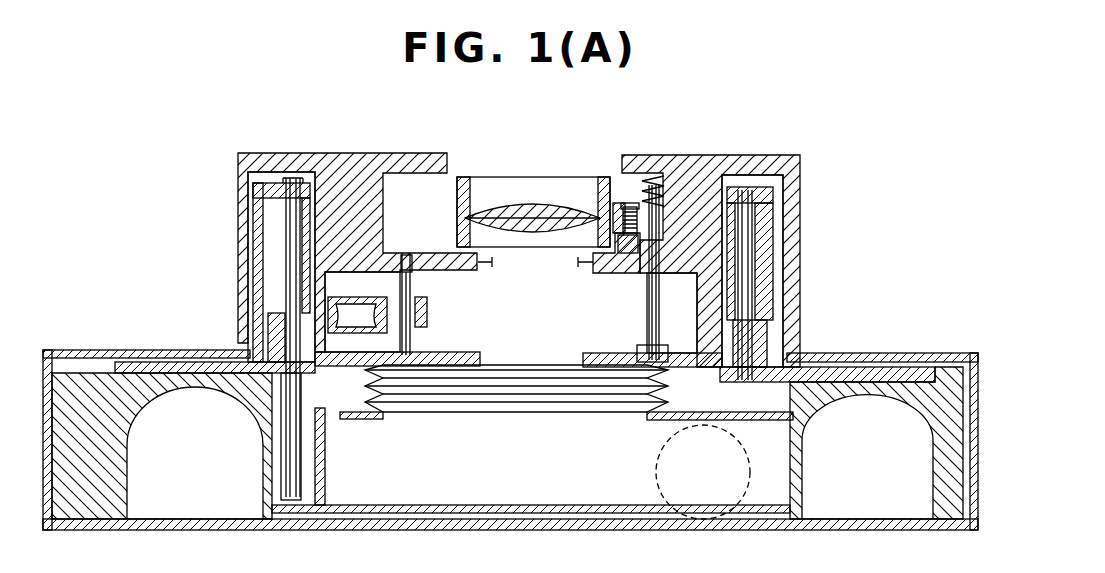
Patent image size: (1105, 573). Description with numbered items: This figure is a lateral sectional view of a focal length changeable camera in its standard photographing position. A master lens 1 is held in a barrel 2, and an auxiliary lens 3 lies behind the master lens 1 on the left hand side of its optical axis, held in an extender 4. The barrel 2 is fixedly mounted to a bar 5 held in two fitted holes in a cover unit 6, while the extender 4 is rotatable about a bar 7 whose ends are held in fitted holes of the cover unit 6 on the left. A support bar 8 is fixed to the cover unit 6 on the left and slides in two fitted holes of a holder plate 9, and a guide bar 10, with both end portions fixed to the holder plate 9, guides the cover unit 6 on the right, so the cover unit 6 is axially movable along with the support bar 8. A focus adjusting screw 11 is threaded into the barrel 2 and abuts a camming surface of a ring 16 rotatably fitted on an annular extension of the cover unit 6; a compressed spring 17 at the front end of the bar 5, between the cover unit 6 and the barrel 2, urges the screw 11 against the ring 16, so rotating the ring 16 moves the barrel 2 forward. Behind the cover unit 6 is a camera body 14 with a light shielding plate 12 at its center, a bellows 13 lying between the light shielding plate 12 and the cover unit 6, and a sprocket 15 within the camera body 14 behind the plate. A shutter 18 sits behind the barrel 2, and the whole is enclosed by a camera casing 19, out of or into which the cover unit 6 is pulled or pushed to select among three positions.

The master lens 1 is at (526, 208).
The barrel 2 is at (561, 185).
The auxiliary lens 3 is at (365, 306).
The extender 4 is at (395, 313).
The bar 5 is at (647, 323).
The cover unit 6 is at (737, 160).
The bar 7 is at (412, 283).
The support bar 8 is at (290, 250).
The holder plate 9 is at (258, 295).
The guide bar 10 is at (750, 254).
The focus adjusting screw 11 is at (623, 210).
The light shielding plate 12 is at (662, 424).
The bellows 13 is at (640, 358).
The camera body 14 is at (978, 424).
The sprocket 15 is at (655, 488).
The ring 16 is at (630, 273).
The compressed spring 17 is at (655, 178).
The shutter 18 is at (490, 266).
The camera casing 19 is at (868, 357).